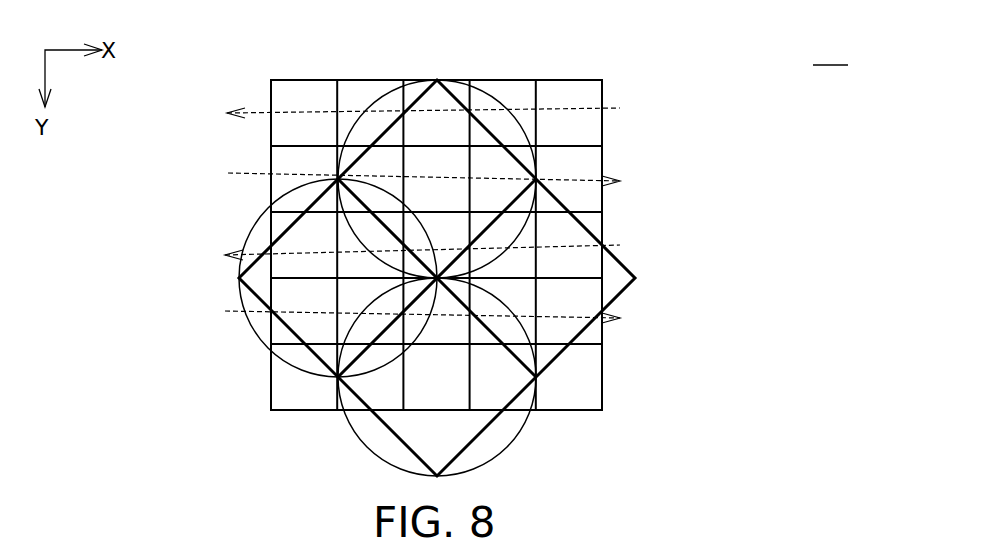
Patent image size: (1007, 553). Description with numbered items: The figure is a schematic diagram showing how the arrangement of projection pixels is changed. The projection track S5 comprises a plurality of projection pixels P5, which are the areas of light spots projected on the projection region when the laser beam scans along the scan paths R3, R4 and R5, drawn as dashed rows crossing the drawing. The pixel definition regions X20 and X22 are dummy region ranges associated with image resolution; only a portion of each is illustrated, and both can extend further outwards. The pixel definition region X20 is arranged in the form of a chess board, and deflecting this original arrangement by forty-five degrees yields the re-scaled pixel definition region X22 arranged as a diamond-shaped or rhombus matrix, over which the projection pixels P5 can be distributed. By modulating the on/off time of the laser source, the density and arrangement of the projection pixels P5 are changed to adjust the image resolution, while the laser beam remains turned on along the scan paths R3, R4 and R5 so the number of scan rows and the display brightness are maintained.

The scan path R3 is at (447, 110).
The scan path R4 is at (403, 173).
The scan path R5 is at (446, 244).
The projection pixel P5 is at (514, 135).
The pixel definition region X20 is at (602, 203).
The pixel definition region X22 is at (626, 289).
The projection track S5 is at (830, 52).